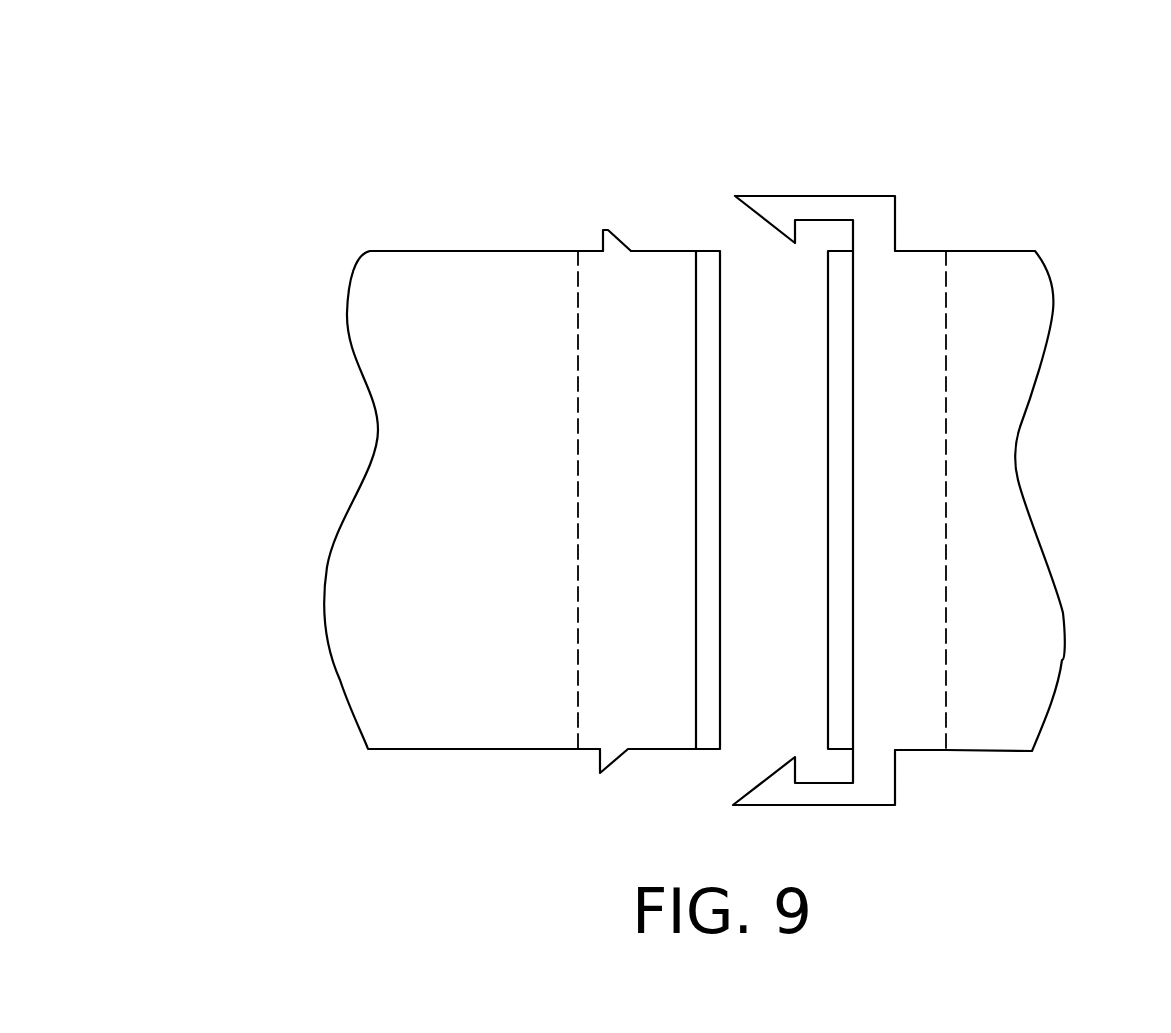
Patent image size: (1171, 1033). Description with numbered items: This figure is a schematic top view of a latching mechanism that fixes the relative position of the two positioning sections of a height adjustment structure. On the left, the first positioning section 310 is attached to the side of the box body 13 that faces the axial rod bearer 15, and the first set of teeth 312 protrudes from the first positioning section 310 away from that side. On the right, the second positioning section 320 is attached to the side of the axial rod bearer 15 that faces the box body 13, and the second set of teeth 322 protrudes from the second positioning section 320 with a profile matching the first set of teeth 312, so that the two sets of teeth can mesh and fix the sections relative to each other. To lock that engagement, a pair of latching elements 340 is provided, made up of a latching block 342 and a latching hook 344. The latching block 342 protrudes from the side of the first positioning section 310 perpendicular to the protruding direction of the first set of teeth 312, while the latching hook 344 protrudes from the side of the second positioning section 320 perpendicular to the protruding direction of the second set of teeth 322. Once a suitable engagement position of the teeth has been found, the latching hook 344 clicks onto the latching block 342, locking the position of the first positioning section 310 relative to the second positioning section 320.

The box body 13 is at (410, 468).
The axial rod bearer 15 is at (1017, 398).
The first positioning section 310 is at (598, 270).
The first set of teeth 312 is at (710, 400).
The second positioning section 320 is at (925, 267).
The second set of teeth 322 is at (838, 347).
The pair of latching elements 340 is at (831, 45).
The latching block 342 is at (603, 230).
The latching hook 344 is at (762, 203).